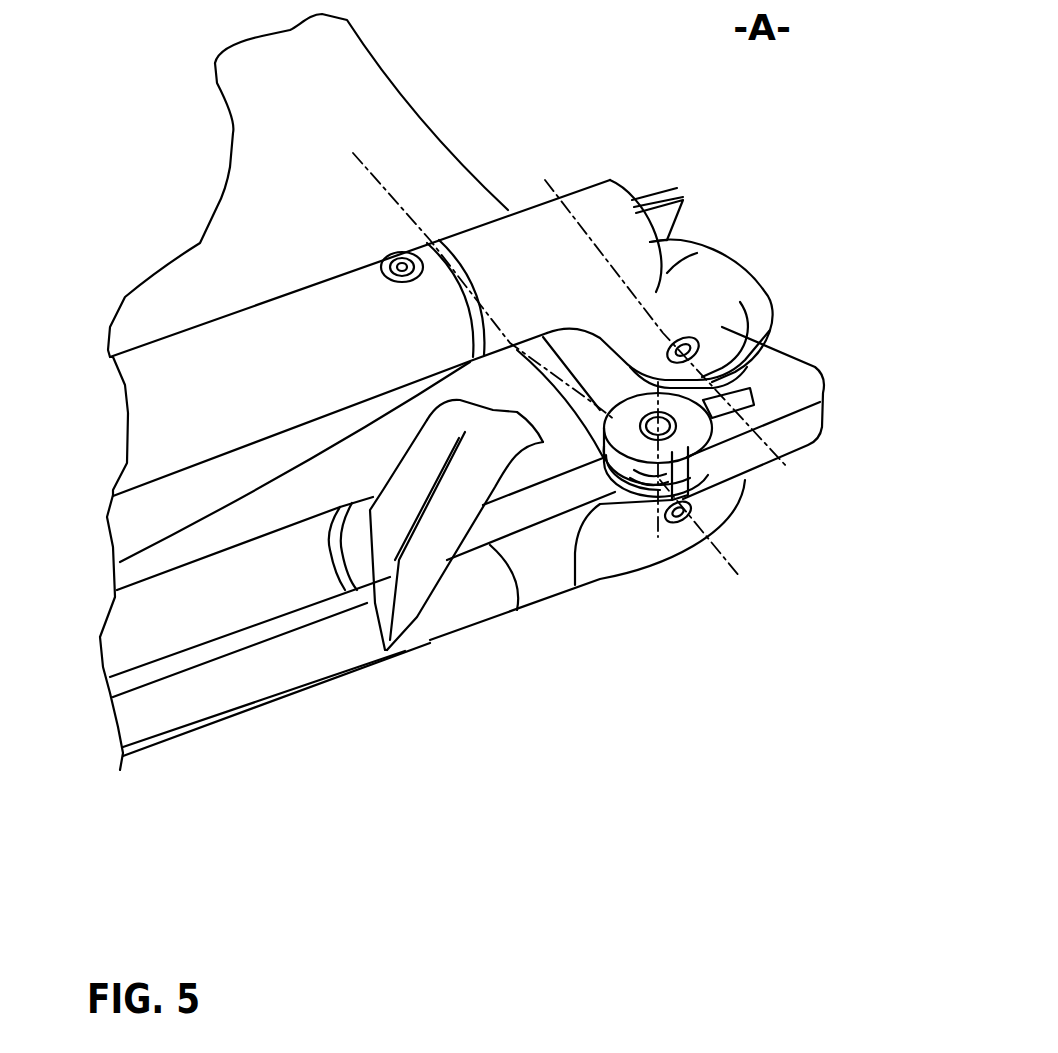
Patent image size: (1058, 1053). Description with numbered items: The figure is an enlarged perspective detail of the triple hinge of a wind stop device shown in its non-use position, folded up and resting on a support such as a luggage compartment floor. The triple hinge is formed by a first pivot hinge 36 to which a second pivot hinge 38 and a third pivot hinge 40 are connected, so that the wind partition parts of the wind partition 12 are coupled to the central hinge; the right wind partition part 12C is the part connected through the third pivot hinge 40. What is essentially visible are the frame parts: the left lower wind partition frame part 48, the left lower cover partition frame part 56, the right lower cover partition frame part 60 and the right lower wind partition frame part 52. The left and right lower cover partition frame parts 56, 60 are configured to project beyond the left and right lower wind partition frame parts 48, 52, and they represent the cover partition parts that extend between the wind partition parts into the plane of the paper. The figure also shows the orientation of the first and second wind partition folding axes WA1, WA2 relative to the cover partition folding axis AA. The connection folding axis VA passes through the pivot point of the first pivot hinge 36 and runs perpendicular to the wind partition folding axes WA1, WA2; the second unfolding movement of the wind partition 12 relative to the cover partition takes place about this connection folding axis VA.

The left lower wind partition frame part 48 is at (242, 342).
The wind partition 12 is at (418, 173).
The cover partition folding axis AA is at (353, 153).
The second pivot hinge 38 is at (703, 277).
The first pivot hinge 36 is at (768, 378).
The first wind partition folding axis WA1 is at (785, 473).
The second wind partition folding axis WA2 is at (740, 577).
The connection folding axis VA is at (658, 537).
The third pivot hinge 40 is at (613, 568).
The right wind partition part 12C is at (527, 567).
The right lower wind partition frame part 52 is at (452, 610).
The right lower cover partition frame part 60 is at (345, 638).
The left lower cover partition frame part 56 is at (210, 618).